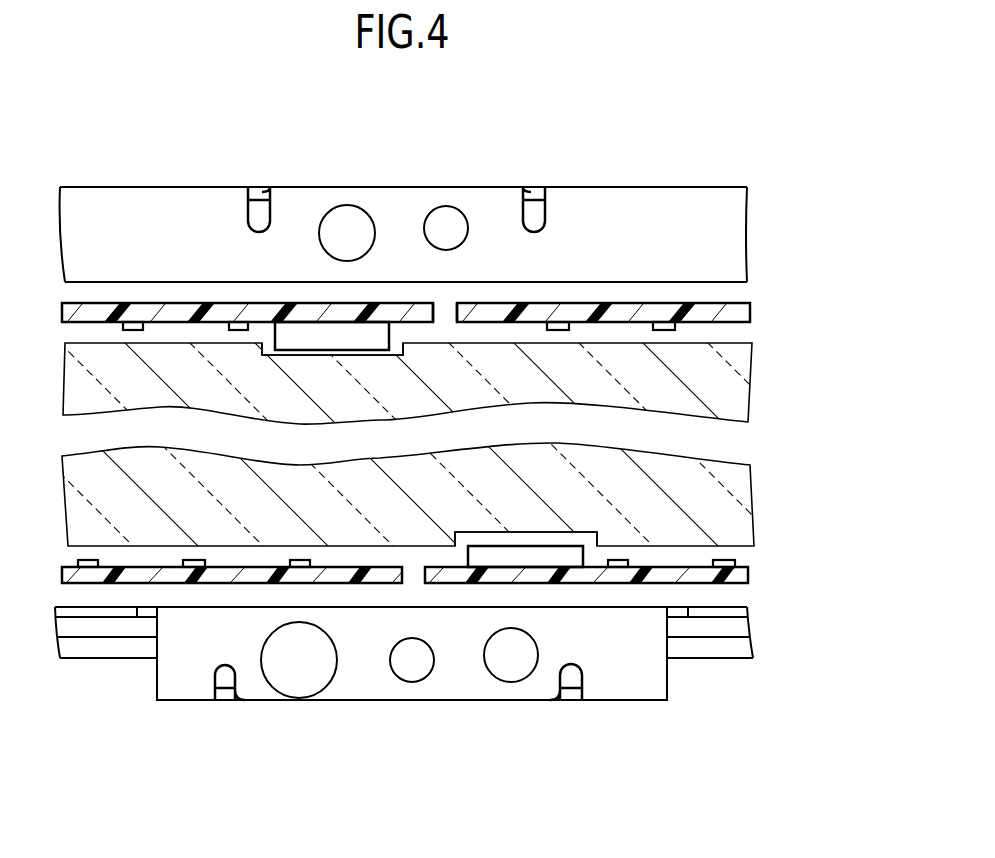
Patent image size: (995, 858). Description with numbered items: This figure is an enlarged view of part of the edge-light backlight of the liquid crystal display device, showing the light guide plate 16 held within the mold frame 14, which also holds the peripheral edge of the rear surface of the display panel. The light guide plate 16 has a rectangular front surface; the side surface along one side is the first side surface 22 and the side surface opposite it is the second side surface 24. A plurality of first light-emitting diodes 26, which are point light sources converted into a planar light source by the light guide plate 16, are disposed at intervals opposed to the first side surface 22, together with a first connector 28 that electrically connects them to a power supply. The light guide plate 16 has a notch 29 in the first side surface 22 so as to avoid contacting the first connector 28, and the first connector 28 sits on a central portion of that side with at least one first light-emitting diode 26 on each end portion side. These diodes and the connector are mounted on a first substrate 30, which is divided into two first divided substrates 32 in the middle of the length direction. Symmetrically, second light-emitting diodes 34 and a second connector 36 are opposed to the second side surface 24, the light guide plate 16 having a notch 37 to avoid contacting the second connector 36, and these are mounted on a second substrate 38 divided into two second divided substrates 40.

The mold frame 14 is at (402, 217).
The light guide plate 16 is at (740, 390).
The first side surface 22 is at (181, 341).
The second side surface 24 is at (255, 572).
The first light-emitting diode 26 is at (134, 322).
The first connector 28 is at (322, 333).
The notch 29 is at (270, 354).
The first substrate 30 is at (585, 113).
The first divided substrate 32 is at (405, 316).
The second light-emitting diode 34 is at (193, 566).
The second connector 36 is at (535, 557).
The notch 37 is at (480, 538).
The second substrate 38 is at (418, 782).
The second divided substrate 40 is at (343, 575).